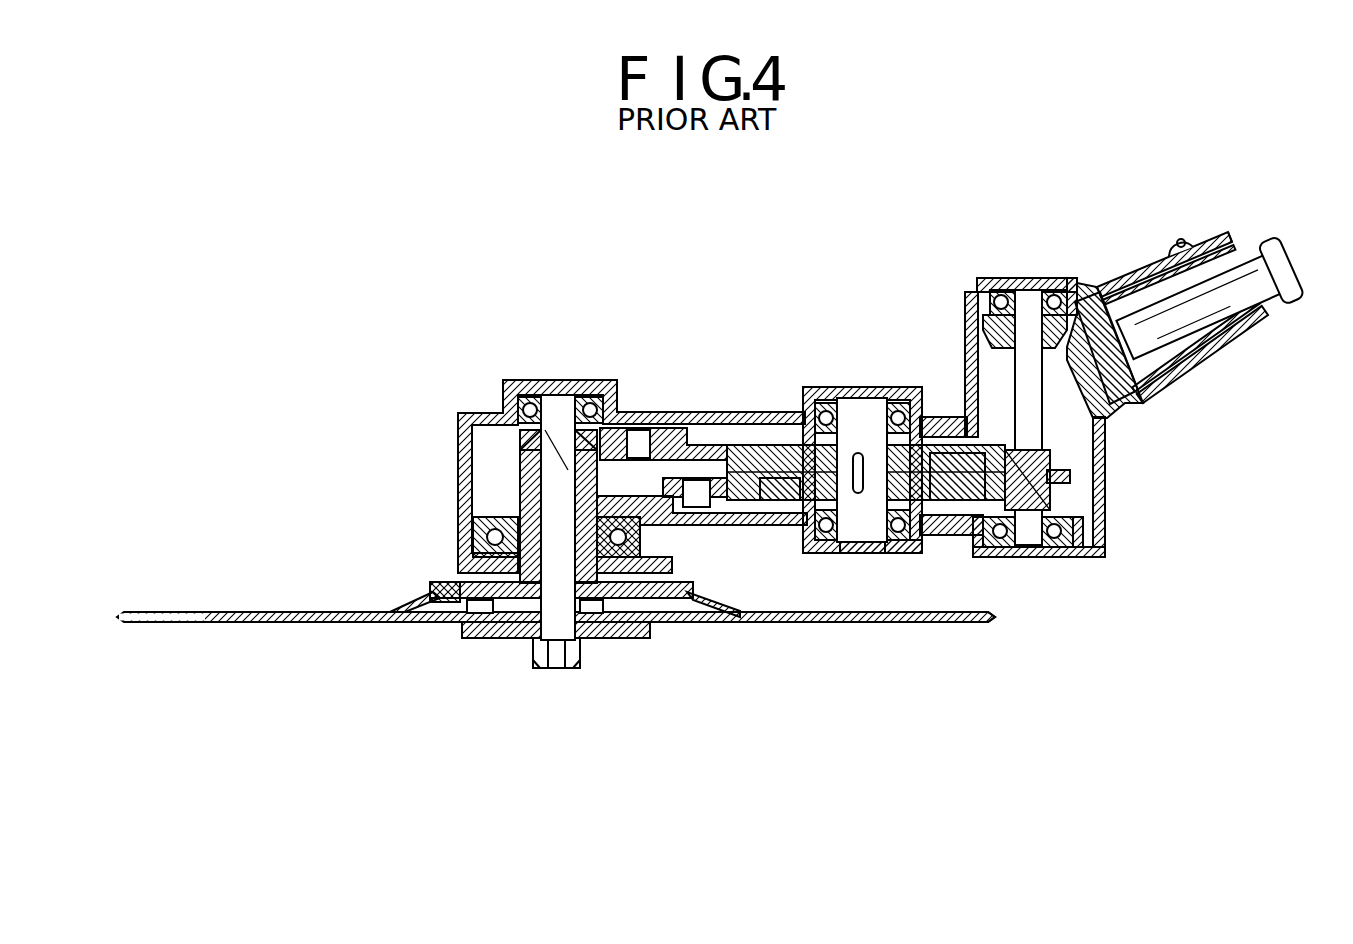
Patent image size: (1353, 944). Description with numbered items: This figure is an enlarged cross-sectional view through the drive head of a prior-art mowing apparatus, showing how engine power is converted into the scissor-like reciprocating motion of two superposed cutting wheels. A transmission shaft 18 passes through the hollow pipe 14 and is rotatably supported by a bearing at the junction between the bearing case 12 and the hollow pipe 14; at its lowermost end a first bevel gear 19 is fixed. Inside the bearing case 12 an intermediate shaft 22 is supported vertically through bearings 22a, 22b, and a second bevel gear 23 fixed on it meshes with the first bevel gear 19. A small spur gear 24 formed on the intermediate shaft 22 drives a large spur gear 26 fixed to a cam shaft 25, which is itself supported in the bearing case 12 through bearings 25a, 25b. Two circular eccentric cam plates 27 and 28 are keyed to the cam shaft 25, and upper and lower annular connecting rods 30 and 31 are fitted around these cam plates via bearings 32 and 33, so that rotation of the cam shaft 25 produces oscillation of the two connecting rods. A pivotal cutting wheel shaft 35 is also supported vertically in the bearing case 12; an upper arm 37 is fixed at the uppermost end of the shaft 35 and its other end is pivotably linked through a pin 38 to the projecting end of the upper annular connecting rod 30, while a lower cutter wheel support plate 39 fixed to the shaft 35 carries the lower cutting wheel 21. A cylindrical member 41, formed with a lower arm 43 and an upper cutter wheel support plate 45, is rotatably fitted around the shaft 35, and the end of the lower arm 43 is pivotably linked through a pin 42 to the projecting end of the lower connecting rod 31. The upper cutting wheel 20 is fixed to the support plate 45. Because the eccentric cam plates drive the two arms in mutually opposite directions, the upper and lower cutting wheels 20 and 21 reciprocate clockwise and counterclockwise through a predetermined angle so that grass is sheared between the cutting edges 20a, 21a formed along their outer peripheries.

The bearing case 12 is at (735, 418).
The hollow pipe 14 is at (1268, 310).
The transmission shaft 18 is at (1233, 262).
The first bevel gear 19 is at (1088, 300).
The upper cutting wheel 20 is at (245, 612).
The cutting edge 20a is at (165, 612).
The lower cutting wheel 21 is at (250, 624).
The cutting edge 21a is at (150, 624).
The intermediate shaft 22 is at (1010, 393).
The bearing 22a is at (1005, 295).
The bearing 22b is at (1078, 550).
The second bevel gear 23 is at (985, 292).
The small spur gear 24 is at (1070, 476).
The cam shaft 25 is at (812, 435).
The bearing 25a is at (897, 420).
The bearing 25b is at (950, 575).
The large spur gear 26 is at (960, 505).
The cam plate 27 is at (825, 525).
The cam plate 28 is at (985, 615).
The upper annular connecting rod 30 is at (677, 452).
The lower annular connecting rod 31 is at (745, 530).
The bearing 32 is at (790, 530).
The bearing 33 is at (865, 560).
The pivotal cutting wheel shaft 35 is at (520, 490).
The upper arm 37 is at (613, 410).
The pin 38 is at (637, 432).
The lower cutter wheel support plate 39 is at (512, 640).
The cylindrical member 41 is at (515, 455).
The pin 42 is at (700, 510).
The lower arm 43 is at (655, 600).
The upper cutter wheel support plate 45 is at (418, 625).